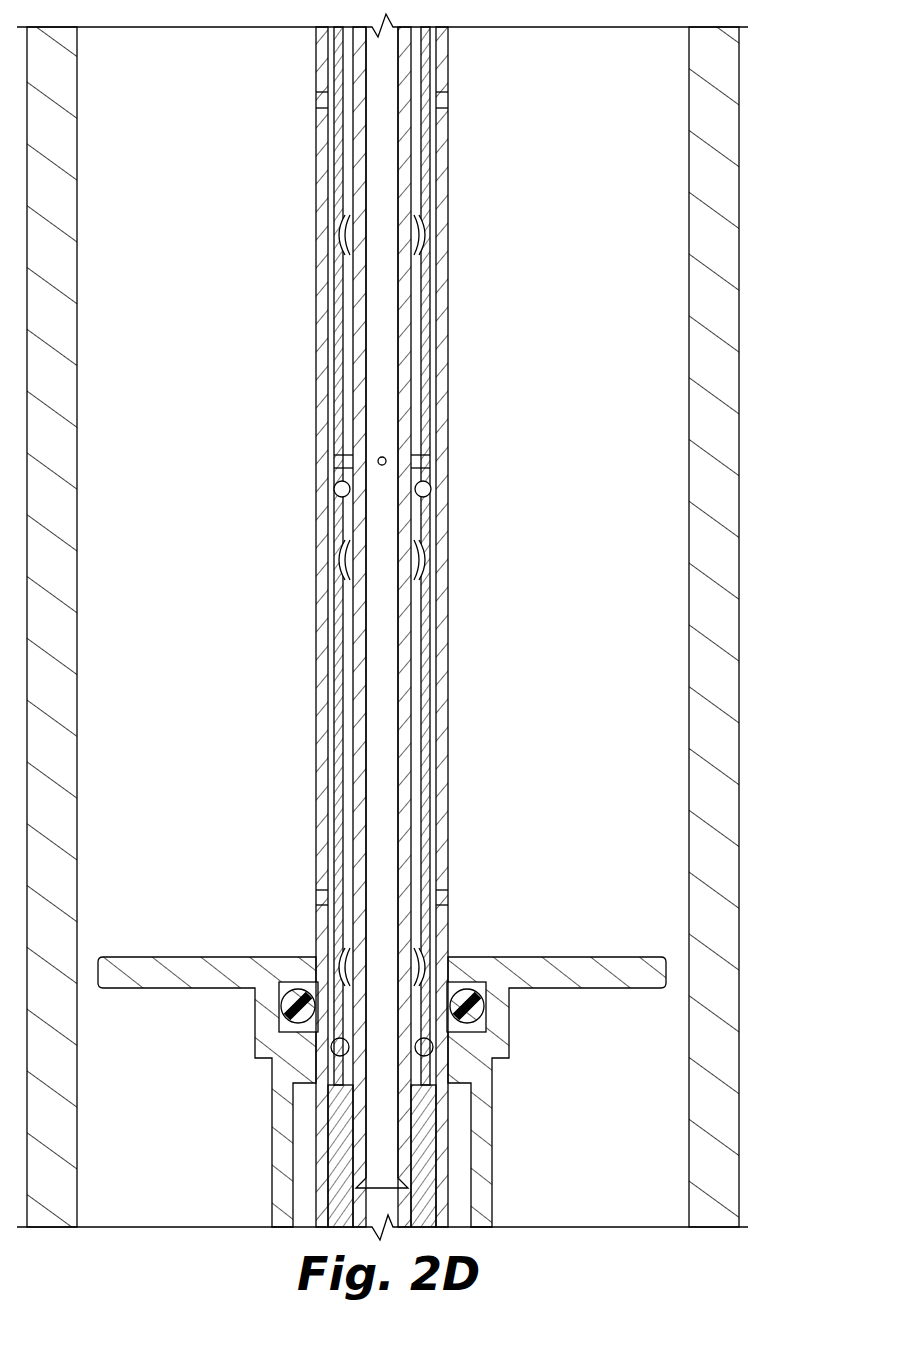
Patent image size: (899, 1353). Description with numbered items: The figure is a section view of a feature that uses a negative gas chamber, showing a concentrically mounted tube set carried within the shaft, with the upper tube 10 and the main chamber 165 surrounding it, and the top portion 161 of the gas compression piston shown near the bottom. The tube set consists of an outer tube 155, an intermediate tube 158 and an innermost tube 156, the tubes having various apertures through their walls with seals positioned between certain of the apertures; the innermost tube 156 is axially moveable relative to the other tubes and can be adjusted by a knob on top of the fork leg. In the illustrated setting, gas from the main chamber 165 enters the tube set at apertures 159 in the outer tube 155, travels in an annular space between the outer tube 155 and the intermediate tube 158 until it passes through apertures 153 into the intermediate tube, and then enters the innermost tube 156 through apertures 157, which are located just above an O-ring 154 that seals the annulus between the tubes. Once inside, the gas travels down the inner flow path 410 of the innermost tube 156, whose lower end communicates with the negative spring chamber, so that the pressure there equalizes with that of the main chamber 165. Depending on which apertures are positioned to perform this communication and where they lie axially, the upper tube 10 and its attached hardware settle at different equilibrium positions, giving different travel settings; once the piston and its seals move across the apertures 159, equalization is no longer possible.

The upper tube 10 is at (740, 425).
The main chamber 165 is at (220, 280).
The top portion of the gas compression piston 161 is at (188, 964).
The outer tube 155 is at (441, 270).
The innermost tube 156 is at (405, 330).
The apertures 157 is at (386, 458).
The intermediate tube 158 is at (432, 190).
The apertures 159 is at (442, 100).
The apertures 153 is at (420, 560).
The O-ring 154 is at (425, 487).
The inner flow path 410 is at (385, 805).